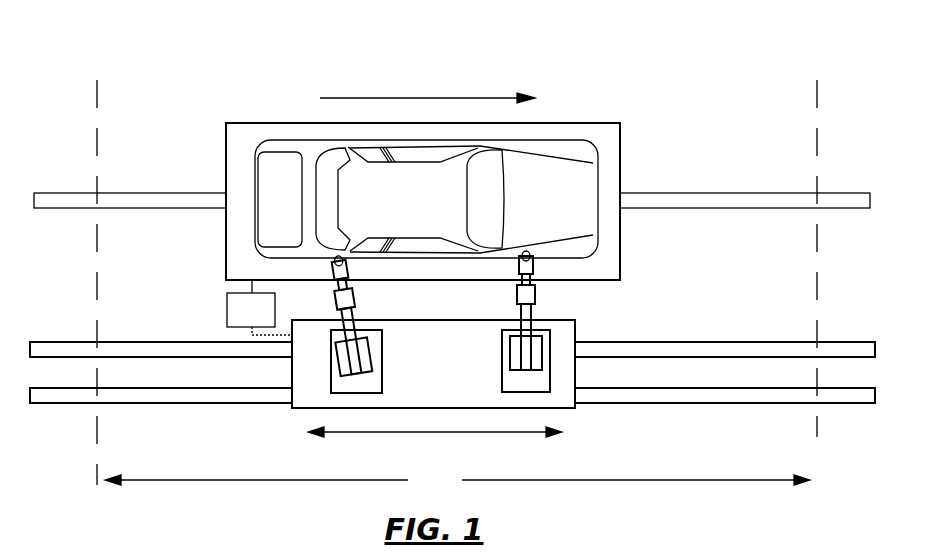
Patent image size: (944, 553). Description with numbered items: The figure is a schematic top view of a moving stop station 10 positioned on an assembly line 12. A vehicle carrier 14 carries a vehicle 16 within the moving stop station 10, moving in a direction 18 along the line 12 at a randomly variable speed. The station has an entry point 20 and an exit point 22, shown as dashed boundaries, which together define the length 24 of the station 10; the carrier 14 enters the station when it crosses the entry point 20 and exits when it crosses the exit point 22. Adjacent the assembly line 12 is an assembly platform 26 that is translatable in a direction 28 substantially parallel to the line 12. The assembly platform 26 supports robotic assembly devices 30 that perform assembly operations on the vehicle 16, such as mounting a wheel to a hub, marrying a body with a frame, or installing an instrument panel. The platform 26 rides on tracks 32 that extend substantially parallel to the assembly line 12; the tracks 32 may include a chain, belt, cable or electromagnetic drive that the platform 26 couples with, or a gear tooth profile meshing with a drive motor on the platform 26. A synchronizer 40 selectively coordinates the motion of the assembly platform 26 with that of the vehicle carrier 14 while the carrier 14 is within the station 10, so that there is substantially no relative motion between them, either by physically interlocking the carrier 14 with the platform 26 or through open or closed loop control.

The moving stop station 10 is at (213, 66).
The assembly line 12 is at (695, 193).
The vehicle carrier 14 is at (620, 233).
The vehicle 16 is at (578, 140).
The direction 18 is at (460, 97).
The entry point 20 is at (97, 476).
The exit point 22 is at (817, 462).
The length 24 is at (457, 481).
The assembly platform 26 is at (580, 328).
The direction 28 is at (522, 435).
The robotic assembly device 30 is at (356, 301).
The track 32 is at (683, 341).
The synchronizer 40 is at (259, 307).